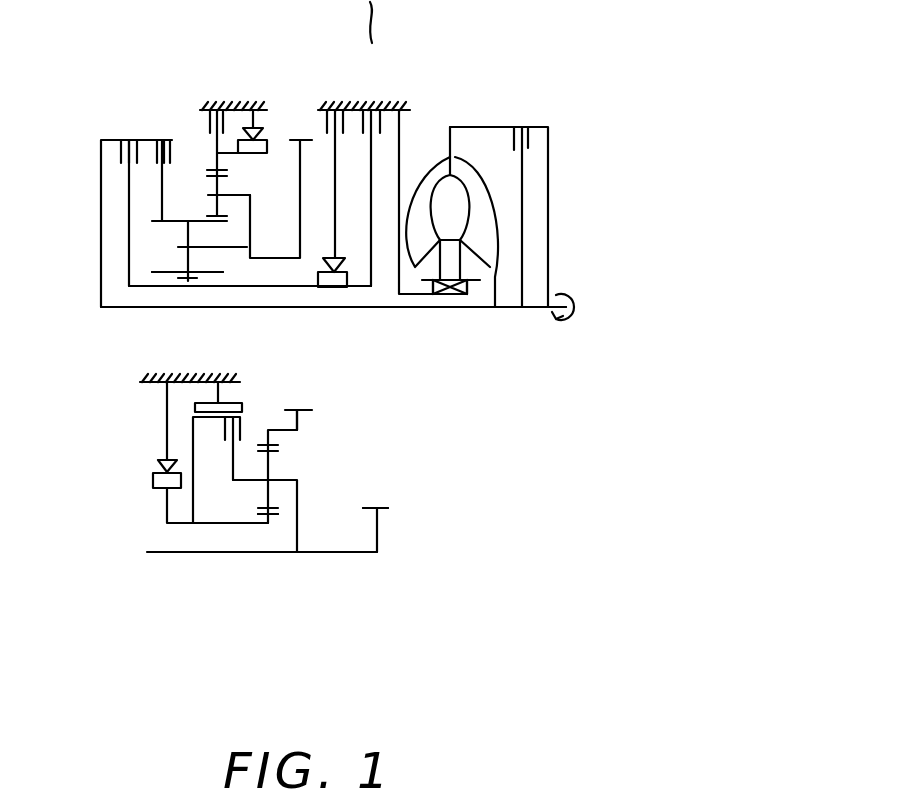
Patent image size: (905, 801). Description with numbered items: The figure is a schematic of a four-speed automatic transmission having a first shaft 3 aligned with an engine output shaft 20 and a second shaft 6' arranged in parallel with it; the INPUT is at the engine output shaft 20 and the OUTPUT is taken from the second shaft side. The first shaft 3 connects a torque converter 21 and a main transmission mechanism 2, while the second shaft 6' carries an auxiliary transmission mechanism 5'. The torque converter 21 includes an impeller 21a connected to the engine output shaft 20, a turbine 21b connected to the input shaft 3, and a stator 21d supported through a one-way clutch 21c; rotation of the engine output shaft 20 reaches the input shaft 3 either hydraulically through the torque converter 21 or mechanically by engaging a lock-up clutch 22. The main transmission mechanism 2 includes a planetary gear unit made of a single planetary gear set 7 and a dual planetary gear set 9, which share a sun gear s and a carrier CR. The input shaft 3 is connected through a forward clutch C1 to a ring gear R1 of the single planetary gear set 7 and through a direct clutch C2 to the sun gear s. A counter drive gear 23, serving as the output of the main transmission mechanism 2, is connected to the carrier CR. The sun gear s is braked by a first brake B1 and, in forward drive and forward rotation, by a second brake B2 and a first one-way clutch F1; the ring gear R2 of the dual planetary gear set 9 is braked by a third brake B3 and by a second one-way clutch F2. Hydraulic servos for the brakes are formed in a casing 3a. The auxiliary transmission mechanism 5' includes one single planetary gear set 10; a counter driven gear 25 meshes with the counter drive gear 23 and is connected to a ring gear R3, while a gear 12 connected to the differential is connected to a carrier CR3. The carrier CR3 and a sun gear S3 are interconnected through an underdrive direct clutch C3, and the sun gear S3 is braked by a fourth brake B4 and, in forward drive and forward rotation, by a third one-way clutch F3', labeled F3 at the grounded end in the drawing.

The main transmission mechanism 2 is at (76, 162).
The first shaft 3 is at (388, 308).
The casing 3a is at (100, 228).
The single planetary gear set 7 is at (143, 300).
The sun gear s is at (180, 287).
The dual planetary gear set 9 is at (225, 285).
The single planetary gear set 10 is at (296, 446).
The gear 12 is at (387, 506).
The engine output shaft 20 is at (550, 310).
The torque converter 21 is at (475, 143).
The impeller 21a is at (440, 172).
The turbine 21b is at (487, 213).
The one-way clutch 21c is at (468, 304).
The stator 21d is at (428, 307).
The lock-up clutch 22 is at (528, 127).
The counter drive gear 23 is at (300, 140).
The counter driven gear 25 is at (303, 410).
The auxiliary transmission mechanism 5' is at (140, 404).
The second shaft 6' is at (262, 589).
The forward clutch C1 is at (163, 136).
The direct clutch C2 is at (116, 136).
The underdrive direct clutch C3 is at (216, 470).
The first brake B1 is at (378, 177).
The second brake B2 is at (362, 163).
The third brake B3 is at (229, 104).
The fourth brake B4 is at (218, 379).
The first one-way clutch F1 is at (341, 256).
The second one-way clutch F2 is at (245, 111).
The third one-way clutch F3 is at (163, 403).
The third one-way clutch F3' is at (188, 489).
The ring gear R1 is at (171, 216).
The ring gear R2 is at (224, 172).
The ring gear R3 is at (262, 440).
The carrier CR is at (258, 248).
The carrier CR3 is at (287, 480).
The sun gear S3 is at (265, 517).
The input INPUT is at (594, 287).
The output OUTPUT is at (357, 514).